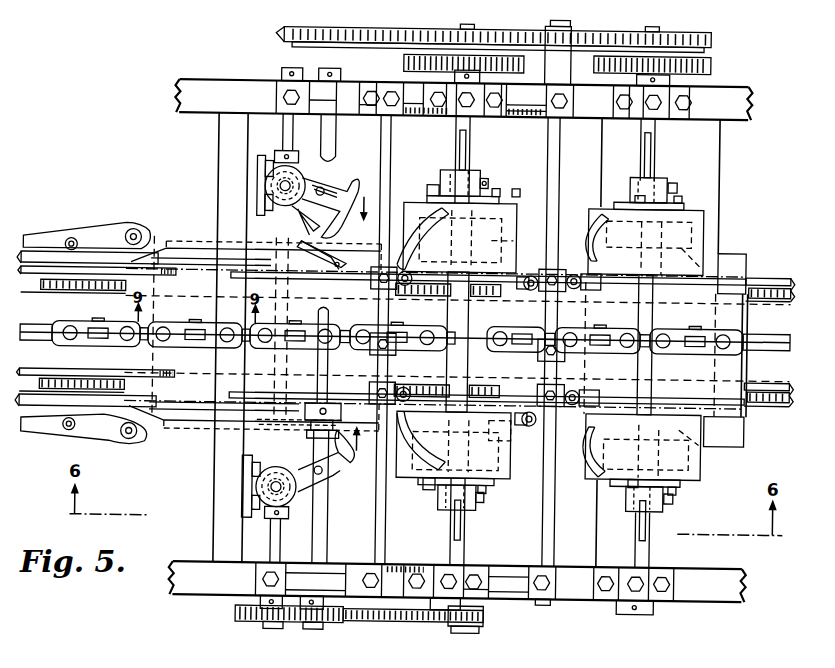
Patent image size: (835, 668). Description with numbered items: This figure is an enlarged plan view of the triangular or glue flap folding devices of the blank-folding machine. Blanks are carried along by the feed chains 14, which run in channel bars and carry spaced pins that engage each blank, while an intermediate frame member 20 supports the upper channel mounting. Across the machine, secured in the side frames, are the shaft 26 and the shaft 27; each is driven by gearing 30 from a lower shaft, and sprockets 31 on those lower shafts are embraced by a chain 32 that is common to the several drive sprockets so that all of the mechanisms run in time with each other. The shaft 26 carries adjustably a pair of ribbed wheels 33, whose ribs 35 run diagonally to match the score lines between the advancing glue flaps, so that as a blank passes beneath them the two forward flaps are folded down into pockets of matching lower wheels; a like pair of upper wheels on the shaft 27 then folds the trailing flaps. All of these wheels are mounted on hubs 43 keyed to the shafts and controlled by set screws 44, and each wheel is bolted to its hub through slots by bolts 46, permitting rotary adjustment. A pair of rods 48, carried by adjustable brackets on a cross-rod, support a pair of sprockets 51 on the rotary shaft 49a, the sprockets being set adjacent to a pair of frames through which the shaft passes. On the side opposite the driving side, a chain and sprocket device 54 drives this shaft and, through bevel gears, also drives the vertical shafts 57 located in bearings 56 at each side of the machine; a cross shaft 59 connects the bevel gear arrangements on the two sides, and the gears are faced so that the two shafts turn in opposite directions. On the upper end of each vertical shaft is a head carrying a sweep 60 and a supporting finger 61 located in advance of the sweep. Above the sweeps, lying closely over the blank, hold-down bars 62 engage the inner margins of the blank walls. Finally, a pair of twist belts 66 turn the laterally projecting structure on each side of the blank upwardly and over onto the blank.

The feed chains 14 is at (787, 269).
The intermediate frame member 20 is at (104, 344).
The shaft 26 is at (654, 156).
The shaft 27 is at (467, 158).
The gearing 30 is at (400, 58).
The sprockets 31 is at (424, 32).
The chain 32 is at (280, 32).
The ribbed wheels 33 is at (702, 222).
The ribs 35 is at (582, 215).
The hubs 43 is at (500, 196).
The set screws 44 is at (486, 502).
The bolts 46 is at (432, 185).
The rods 48 is at (342, 441).
The rotary shaft 49a is at (328, 136).
The sprockets 51 is at (320, 447).
The chain and sprocket device 54 is at (380, 624).
The bearings 56 is at (258, 190).
The vertical shafts 57 is at (288, 166).
The cross shaft 59 is at (274, 523).
The sweep 60 is at (348, 181).
The supporting finger 61 is at (330, 233).
The hold-down bars 62 is at (210, 253).
The twist belts 66 is at (85, 233).